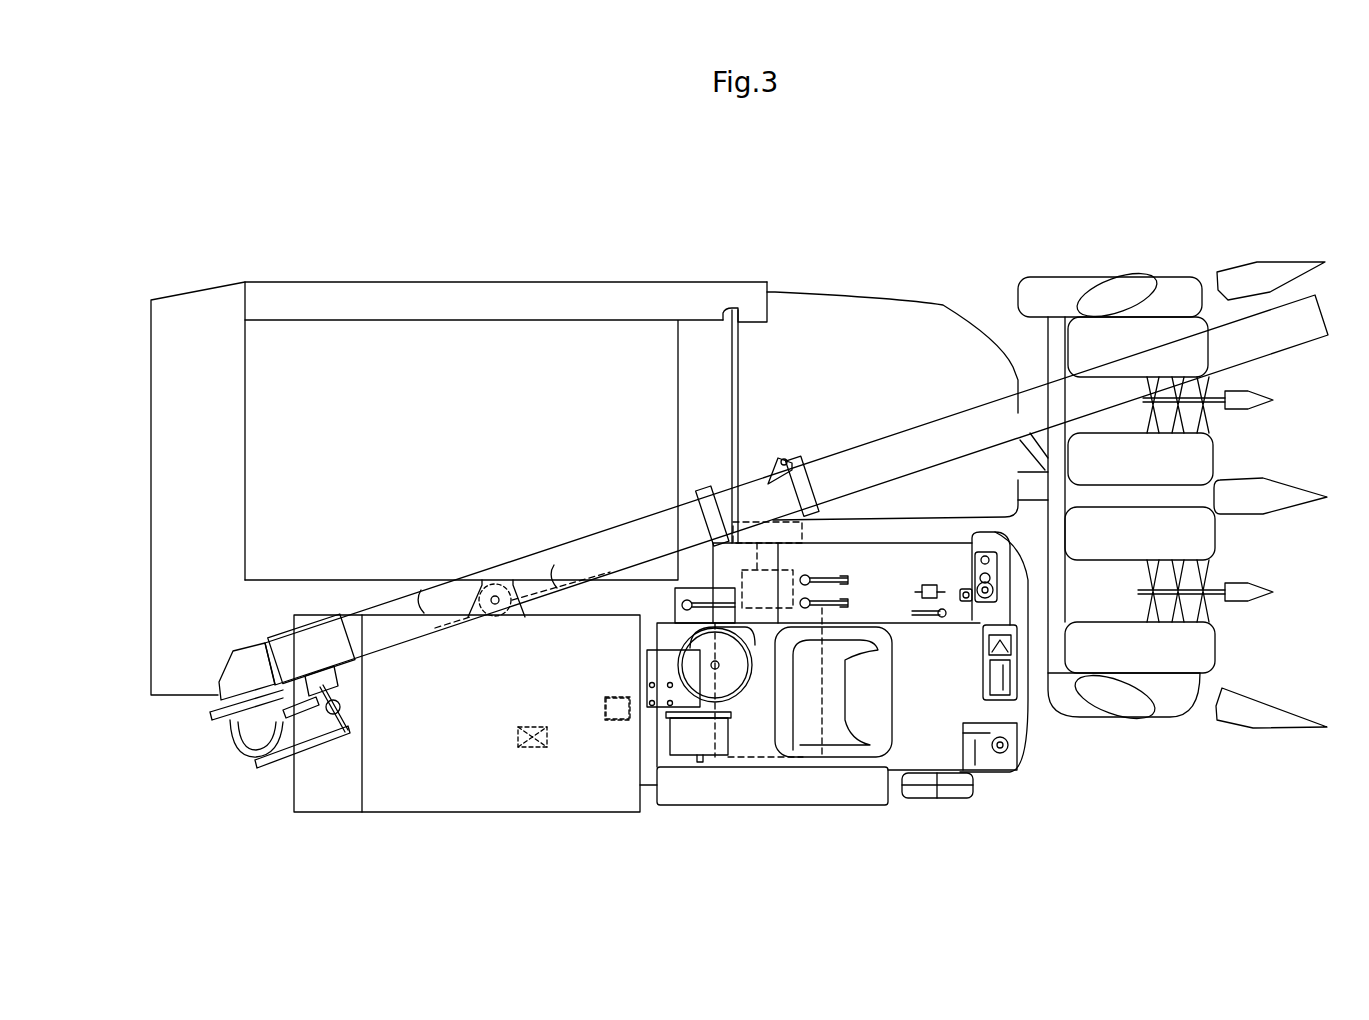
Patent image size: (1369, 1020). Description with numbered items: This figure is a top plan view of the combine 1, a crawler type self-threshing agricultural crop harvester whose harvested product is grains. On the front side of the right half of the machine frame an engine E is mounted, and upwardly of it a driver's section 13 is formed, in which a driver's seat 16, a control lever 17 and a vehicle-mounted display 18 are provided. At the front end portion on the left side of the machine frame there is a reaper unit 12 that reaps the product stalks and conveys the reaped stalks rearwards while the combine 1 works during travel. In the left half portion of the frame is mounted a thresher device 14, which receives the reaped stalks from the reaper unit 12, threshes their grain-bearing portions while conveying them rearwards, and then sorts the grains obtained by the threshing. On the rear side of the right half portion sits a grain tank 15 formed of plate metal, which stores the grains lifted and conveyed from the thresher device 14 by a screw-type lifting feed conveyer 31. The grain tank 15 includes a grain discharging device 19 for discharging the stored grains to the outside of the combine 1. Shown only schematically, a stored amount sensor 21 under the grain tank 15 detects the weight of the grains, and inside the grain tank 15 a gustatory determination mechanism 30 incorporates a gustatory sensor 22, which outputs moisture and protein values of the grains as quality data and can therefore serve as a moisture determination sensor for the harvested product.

The combine 1 is at (232, 185).
The reaper unit 12 is at (1170, 243).
The driver's section 13 is at (940, 815).
The thresher device 14 is at (458, 345).
The grain tank 15 is at (440, 814).
The driver's seat 16 is at (898, 683).
The control lever 17 is at (925, 583).
The vehicle-mounted display 18 is at (980, 673).
The grain discharging device 19 is at (238, 772).
The stored amount sensor 21 is at (512, 747).
The gustatory sensor 22 is at (625, 732).
The gustatory determination mechanism 30 is at (592, 707).
The lifting feed conveyer 31 is at (515, 595).
The engine E is at (755, 767).